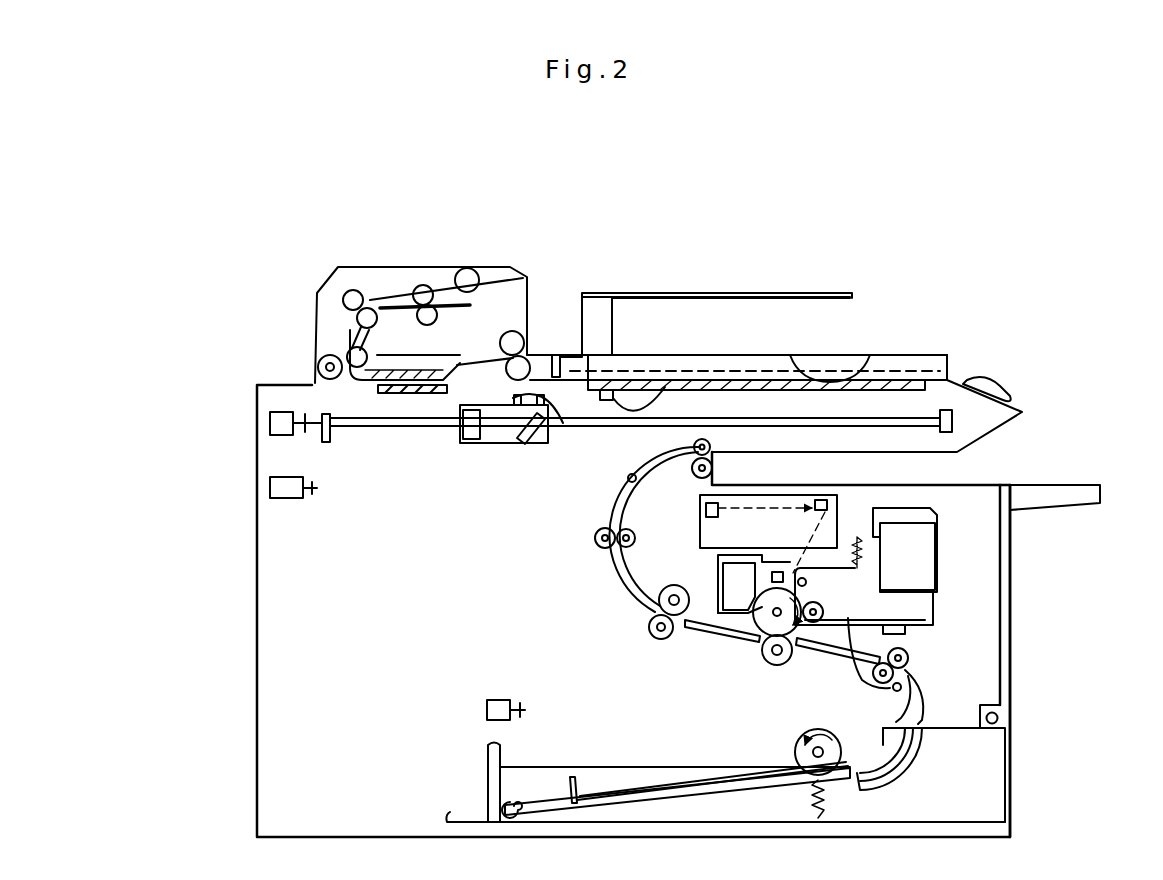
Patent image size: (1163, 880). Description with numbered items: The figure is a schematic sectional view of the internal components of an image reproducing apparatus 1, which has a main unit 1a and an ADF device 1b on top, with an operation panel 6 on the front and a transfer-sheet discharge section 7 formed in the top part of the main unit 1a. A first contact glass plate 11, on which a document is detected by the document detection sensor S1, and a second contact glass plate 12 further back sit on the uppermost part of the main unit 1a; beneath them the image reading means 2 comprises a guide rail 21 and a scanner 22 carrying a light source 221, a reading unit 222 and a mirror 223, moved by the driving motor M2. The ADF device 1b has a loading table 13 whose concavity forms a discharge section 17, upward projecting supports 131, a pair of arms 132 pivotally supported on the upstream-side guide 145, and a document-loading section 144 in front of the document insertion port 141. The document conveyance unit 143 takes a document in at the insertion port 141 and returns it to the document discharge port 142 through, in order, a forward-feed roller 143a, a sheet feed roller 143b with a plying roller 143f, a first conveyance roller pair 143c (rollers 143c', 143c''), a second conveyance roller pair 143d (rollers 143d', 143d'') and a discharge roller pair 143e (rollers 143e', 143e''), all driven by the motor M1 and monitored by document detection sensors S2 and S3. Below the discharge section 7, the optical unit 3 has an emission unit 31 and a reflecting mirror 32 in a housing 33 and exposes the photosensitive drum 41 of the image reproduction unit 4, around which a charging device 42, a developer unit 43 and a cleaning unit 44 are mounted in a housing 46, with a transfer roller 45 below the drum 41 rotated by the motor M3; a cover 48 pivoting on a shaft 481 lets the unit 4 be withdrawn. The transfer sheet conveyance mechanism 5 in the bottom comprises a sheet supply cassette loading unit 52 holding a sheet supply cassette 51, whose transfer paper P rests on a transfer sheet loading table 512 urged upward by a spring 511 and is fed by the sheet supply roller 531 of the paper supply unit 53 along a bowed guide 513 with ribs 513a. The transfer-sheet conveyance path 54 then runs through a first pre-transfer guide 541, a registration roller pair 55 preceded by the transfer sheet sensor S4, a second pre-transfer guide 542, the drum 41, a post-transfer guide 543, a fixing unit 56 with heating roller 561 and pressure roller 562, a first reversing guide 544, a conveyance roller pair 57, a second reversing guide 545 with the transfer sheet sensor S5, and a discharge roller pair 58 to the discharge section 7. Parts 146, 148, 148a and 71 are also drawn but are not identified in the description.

The image reproducing apparatus 1 is at (952, 232).
The main unit 1a is at (1030, 450).
The ADF device 1b is at (962, 345).
The operation panel 6 is at (990, 388).
The first contact glass plate 11 is at (875, 357).
The loading table 13 is at (912, 355).
The discharge section 17 is at (820, 355).
The upward projecting supports 131 is at (597, 317).
The arms 132 is at (593, 363).
The document-loading section 144 is at (755, 291).
The document detection sensor S1 is at (655, 410).
The guide rail 21 is at (693, 400).
The scanner 22 is at (498, 445).
The light source 221 is at (548, 402).
The reading unit 222 is at (483, 443).
The mirror 223 is at (540, 443).
The image reading means 2 is at (462, 457).
The second contact glass plate 12 is at (392, 393).
The drive coupling 146 is at (463, 383).
The plying roller 143f is at (408, 388).
The driving motor M1 is at (268, 428).
The driving motor M2 is at (268, 490).
The driving motor M3 is at (487, 710).
The document detection sensor S3 is at (327, 390).
The document conveyance unit 143 is at (377, 255).
The document path guide 148 is at (347, 277).
The feed roller 148a is at (445, 277).
The forward-feed roller 143a is at (467, 268).
The sheet feed roller 143b is at (417, 287).
The document insertion port 141 is at (532, 277).
The document discharge port 142 is at (530, 358).
The discharge roller pair 143e is at (716, 188).
The roller 143e' is at (597, 247).
The roller 143e'' is at (593, 273).
The first conveyance roller pair 143c is at (117, 235).
The roller 143c' is at (270, 282).
The roller 143c'' is at (263, 257).
The second conveyance roller pair 143d is at (223, 328).
The roller 143d' is at (257, 316).
The roller 143d'' is at (265, 348).
The upstream-side guide 145 is at (318, 378).
The document detection sensor S2 is at (466, 331).
The discharge roller pair 58 is at (692, 465).
The transfer-sheet conveyance path 54 is at (610, 563).
The first reversing guide 544 is at (623, 577).
The second reversing guide 545 is at (595, 540).
The conveyance roller pair 57 is at (636, 548).
The transfer sheet sensor S5 is at (628, 478).
The heating roller 561 is at (658, 596).
The fixing unit 56 is at (650, 622).
The pressure roller 562 is at (652, 640).
The post-transfer guide 543 is at (700, 630).
The photosensitive drum 41 is at (758, 640).
The transfer roller 45 is at (767, 662).
The image reproduction unit 4 is at (935, 630).
The second pre-transfer guide 542 is at (818, 653).
The transfer sheet sensor S4 is at (834, 607).
The optical unit 3 is at (698, 520).
The emission unit 31 is at (703, 510).
The reflecting mirror 32 is at (817, 500).
The housing 33 is at (840, 522).
The cleaning unit 44 is at (745, 580).
The charging device 42 is at (778, 572).
The housing 46 is at (930, 520).
The developer unit 43 is at (900, 585).
The registration roller pair 55 is at (912, 658).
The first pre-transfer guide 541 is at (916, 684).
The transfer-sheet discharge section 7 is at (912, 488).
The discharge tray 71 is at (1073, 492).
The cover 48 is at (1013, 590).
The shaft 481 is at (1000, 716).
The transfer sheet conveyance mechanism 5 is at (758, 712).
The sheet supply roller 531 is at (800, 745).
The paper supply unit 53 is at (850, 748).
The sheet supply cassette loading unit 52 is at (712, 825).
The transfer paper P is at (606, 785).
The transfer sheet loading table 512 is at (640, 820).
The sheet supply cassette 51 is at (760, 810).
The spring 511 is at (825, 820).
The guide 513 is at (898, 778).
The ribs 513a is at (905, 750).